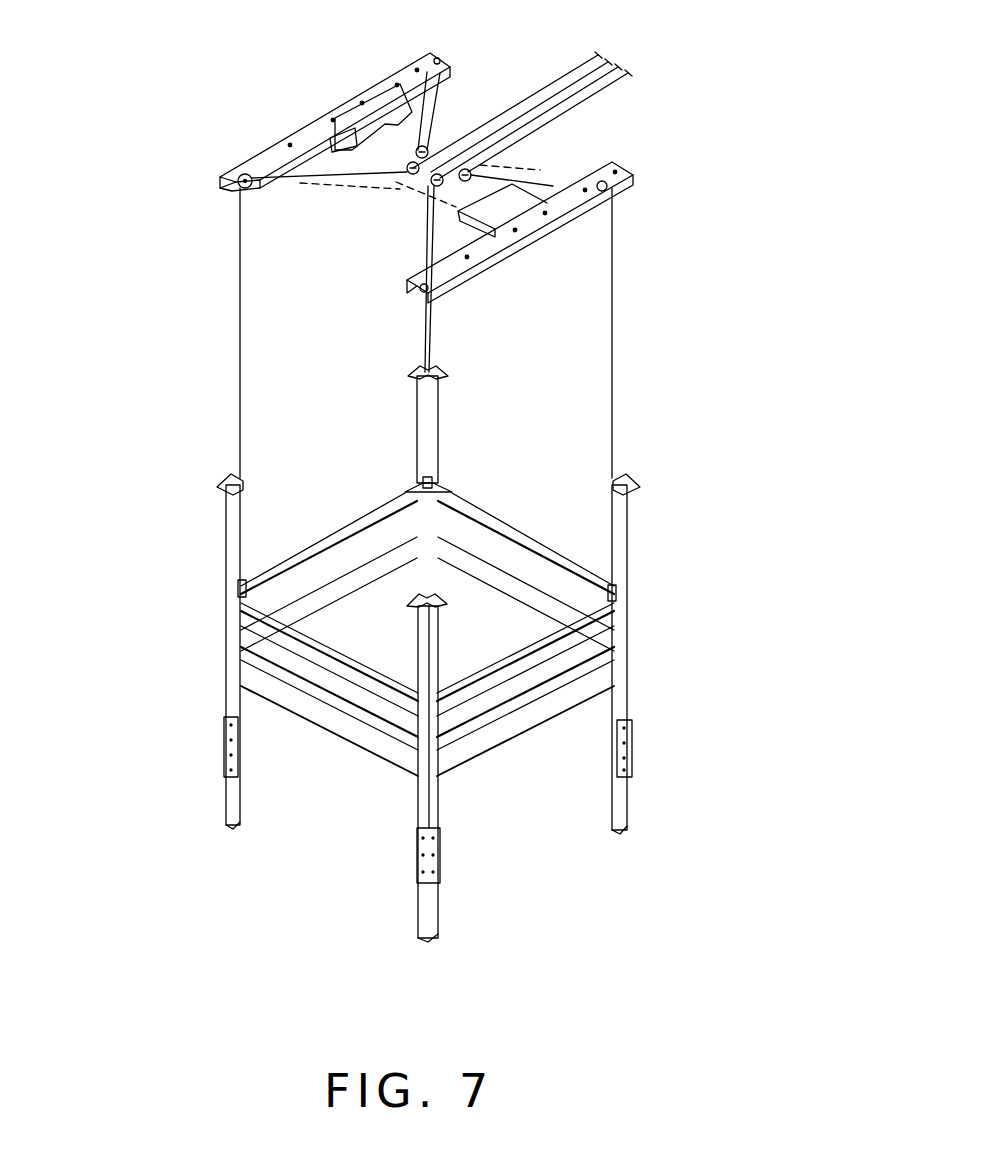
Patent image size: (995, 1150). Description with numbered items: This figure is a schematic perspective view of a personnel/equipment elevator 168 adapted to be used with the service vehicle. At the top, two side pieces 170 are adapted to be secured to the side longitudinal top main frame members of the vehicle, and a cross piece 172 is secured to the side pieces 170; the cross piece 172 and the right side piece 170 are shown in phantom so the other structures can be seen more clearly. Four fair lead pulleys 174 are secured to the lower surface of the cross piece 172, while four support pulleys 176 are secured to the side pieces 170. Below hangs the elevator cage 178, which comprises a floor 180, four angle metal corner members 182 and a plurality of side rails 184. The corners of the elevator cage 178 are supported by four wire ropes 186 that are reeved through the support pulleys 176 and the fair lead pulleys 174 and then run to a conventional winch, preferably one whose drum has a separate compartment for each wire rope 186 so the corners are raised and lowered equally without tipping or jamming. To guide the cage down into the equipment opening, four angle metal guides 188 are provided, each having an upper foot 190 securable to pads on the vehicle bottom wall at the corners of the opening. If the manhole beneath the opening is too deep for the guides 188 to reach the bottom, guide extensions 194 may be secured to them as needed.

The elevator 168 is at (150, 412).
The side pieces 170 is at (278, 150).
The cross piece 172 is at (360, 120).
The fair lead pulleys 174 is at (410, 167).
The support pulleys 176 is at (440, 58).
The elevator cage 178 is at (342, 500).
The floor 180 is at (492, 653).
The angle metal corner members 182 is at (433, 513).
The side rails 184 is at (353, 560).
The wire ropes 186 is at (436, 116).
The angle metal guides 188 is at (440, 430).
The upper feet 190 is at (410, 372).
The guide extensions 194 is at (228, 805).